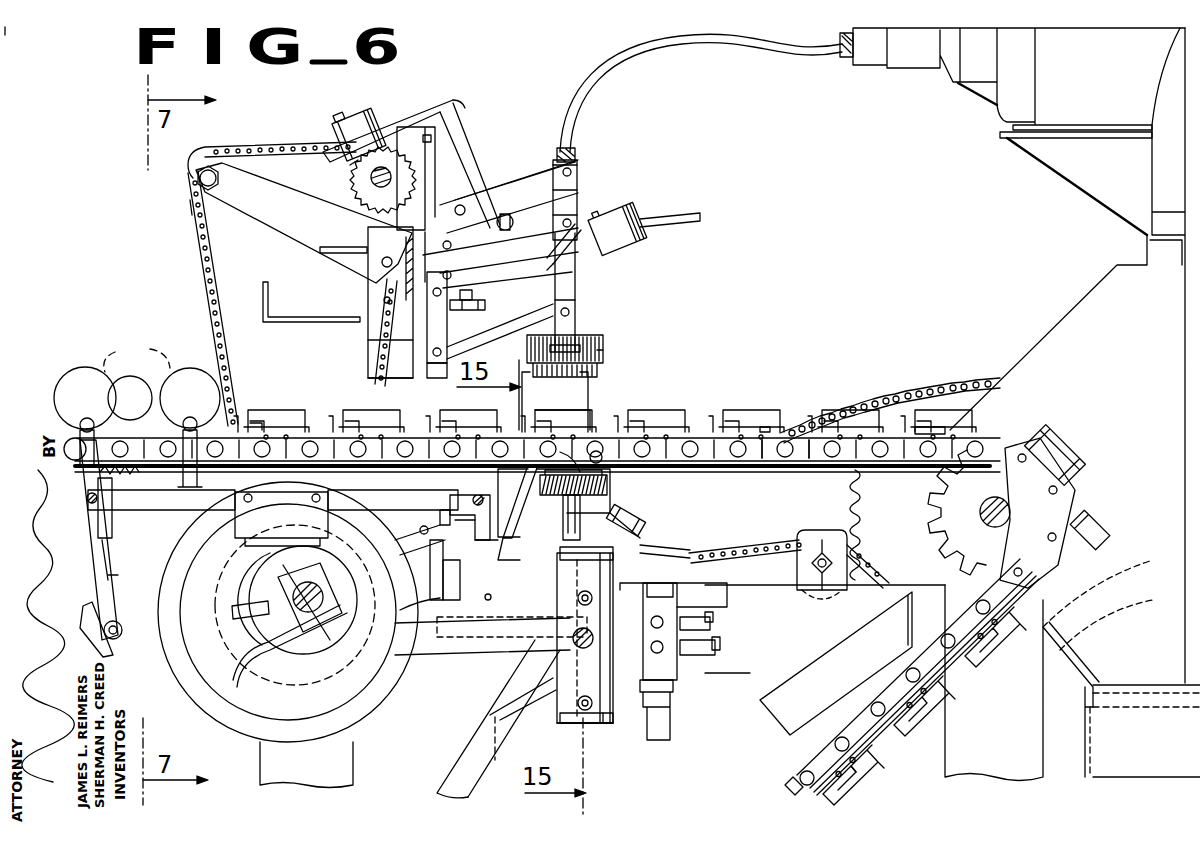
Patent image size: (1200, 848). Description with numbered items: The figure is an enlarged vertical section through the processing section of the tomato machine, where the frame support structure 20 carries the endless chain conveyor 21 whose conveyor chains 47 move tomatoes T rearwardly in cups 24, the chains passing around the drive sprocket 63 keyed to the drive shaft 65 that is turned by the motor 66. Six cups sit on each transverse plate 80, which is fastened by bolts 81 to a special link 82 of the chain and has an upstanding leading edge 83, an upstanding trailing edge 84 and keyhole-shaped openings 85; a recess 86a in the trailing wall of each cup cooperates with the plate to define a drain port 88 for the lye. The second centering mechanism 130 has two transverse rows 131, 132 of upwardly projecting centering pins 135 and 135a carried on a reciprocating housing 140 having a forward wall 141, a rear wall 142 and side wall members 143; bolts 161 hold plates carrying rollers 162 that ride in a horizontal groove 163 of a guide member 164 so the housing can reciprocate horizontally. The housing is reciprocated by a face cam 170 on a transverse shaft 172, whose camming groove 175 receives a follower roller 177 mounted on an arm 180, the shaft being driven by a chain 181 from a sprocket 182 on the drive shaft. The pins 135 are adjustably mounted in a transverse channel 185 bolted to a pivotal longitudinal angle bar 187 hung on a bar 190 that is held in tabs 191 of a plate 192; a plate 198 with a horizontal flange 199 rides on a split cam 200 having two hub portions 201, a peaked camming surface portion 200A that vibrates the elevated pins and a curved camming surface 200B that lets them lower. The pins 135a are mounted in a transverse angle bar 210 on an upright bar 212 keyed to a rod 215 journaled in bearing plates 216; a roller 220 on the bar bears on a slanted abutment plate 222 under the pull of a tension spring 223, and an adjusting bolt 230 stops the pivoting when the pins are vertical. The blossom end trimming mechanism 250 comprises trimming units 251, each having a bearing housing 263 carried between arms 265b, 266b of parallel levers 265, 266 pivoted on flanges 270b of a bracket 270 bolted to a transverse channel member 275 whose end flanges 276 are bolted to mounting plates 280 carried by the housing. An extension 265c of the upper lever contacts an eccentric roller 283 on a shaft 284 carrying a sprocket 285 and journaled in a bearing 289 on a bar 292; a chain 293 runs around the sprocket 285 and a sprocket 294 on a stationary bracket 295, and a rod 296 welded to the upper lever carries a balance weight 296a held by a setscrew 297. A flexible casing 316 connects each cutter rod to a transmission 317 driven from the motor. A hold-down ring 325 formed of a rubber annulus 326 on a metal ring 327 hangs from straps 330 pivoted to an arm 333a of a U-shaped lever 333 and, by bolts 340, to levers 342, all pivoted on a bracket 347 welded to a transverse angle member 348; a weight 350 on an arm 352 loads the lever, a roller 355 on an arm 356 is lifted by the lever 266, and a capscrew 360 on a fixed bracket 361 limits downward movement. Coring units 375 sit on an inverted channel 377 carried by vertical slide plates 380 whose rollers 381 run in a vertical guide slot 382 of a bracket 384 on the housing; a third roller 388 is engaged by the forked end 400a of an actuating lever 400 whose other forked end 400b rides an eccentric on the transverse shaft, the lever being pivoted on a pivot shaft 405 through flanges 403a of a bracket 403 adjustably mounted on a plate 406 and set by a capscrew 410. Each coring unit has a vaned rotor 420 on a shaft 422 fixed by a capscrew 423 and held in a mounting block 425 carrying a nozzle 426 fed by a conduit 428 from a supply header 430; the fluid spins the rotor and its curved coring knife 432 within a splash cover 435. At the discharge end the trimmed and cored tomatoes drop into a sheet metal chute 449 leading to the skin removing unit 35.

The machine frame 20 is at (950, 774).
The conveyor chain 21 is at (767, 405).
The cup carrier 24 is at (280, 413).
The chute 35 is at (1086, 754).
The bracket 47 is at (1043, 420).
The plate 63 is at (1015, 491).
The shaft 65 is at (993, 527).
The housing 66 is at (1158, 100).
The link 80 is at (425, 432).
The link plate 81 is at (768, 434).
The link plate 82 is at (837, 453).
The plate 83 is at (425, 413).
The bracket 84 is at (875, 750).
The cup 85 is at (283, 407).
The carrier block 86a is at (920, 427).
The cup 88 is at (952, 423).
The lever 130 is at (94, 555).
The ball 131 is at (72, 438).
The post 132 is at (200, 467).
The circle path 135 is at (207, 363).
The circle path 135a is at (83, 423).
The bracket 140 is at (467, 682).
The plate 141 is at (443, 552).
The fitting 142 is at (708, 614).
The plate 143 is at (557, 590).
The hole 161 is at (493, 621).
The hidden bar 162 is at (470, 630).
The valve block 163 is at (713, 568).
The bar 164 is at (708, 594).
The arm 170 is at (477, 700).
The ring 172 is at (267, 597).
The block 175 is at (340, 684).
The pin 177 is at (353, 680).
The link 180 is at (413, 557).
The chain 181 is at (1000, 384).
The rack 182 is at (915, 525).
The bar 185 is at (273, 496).
The link 187 is at (174, 540).
The frame plate 190 is at (468, 505).
The bracket 191 is at (480, 520).
The bracket 192 is at (487, 525).
The box 198 is at (308, 521).
The disc 199 is at (317, 538).
The wheel 200 is at (240, 675).
The wheel part 200A is at (268, 570).
The wheel part 200B is at (333, 650).
The slide block 201 is at (290, 553).
The circle path 210 is at (85, 398).
The link 212 is at (113, 567).
The bolt 215 is at (110, 513).
The plate 216 is at (100, 482).
The roller 220 is at (120, 640).
The foot 222 is at (118, 667).
The spring 223 is at (123, 477).
The circle path 230 is at (140, 395).
The arm assembly 250 is at (605, 156).
The nut 251 is at (577, 156).
The end block 263 is at (577, 182).
The arm 265 is at (527, 177).
The arm end 265b is at (580, 163).
The bar 265c is at (378, 258).
The arm 266 is at (528, 230).
The arm end 266b is at (580, 208).
The arm 270 is at (437, 240).
The pin 270b is at (452, 193).
The box 275 is at (358, 283).
The plate 276 is at (363, 268).
The cylinder 280 is at (574, 404).
The gear 283 is at (368, 205).
The hub 284 is at (371, 180).
The pin 285 is at (351, 167).
The plate 289 is at (388, 153).
The frame 292 is at (453, 100).
The chain 293 is at (197, 237).
The chain strand 294 is at (192, 227).
The arm 295 is at (270, 201).
The beam 296 is at (463, 120).
The nut 296a is at (344, 110).
The cylinder 297 is at (370, 99).
The cable 316 is at (597, 77).
The motor 317 is at (1119, 61).
The cylinder assembly 325 is at (605, 345).
The housing 326 is at (603, 370).
The plate 327 is at (604, 356).
The bar 330 is at (578, 323).
The shaft 333 is at (548, 262).
The shaft end 333a is at (575, 252).
The plate 340 is at (573, 310).
The bar 342 is at (505, 338).
The plate 347 is at (425, 357).
The plate 348 is at (400, 327).
The cylinder 350 is at (668, 206).
The rod 352 is at (668, 214).
The pin 355 is at (500, 220).
The pin 356 is at (558, 282).
The bolt 360 is at (480, 308).
The nut 361 is at (470, 303).
The shaft 375 is at (592, 467).
The rod 377 is at (652, 550).
The plate 380 is at (593, 720).
The screw 381 is at (570, 597).
The bracket 382 is at (547, 650).
The plate 384 is at (590, 740).
The nut 388 is at (580, 633).
The bracket 400 is at (380, 720).
The bracket end 400a is at (593, 728).
The bar 400b is at (280, 637).
The arm 403 is at (437, 607).
The bar 403a is at (406, 504).
The arm 405 is at (393, 648).
The plate 406 is at (440, 570).
The bracket 410 is at (457, 511).
The housing 420 is at (608, 487).
The plate 422 is at (564, 558).
The fitting 423 is at (650, 560).
The shaft 425 is at (610, 514).
The bracket 426 is at (680, 537).
The fitting 428 is at (722, 556).
The fitting 430 is at (713, 653).
The rod 432 is at (565, 445).
The gear 435 is at (597, 488).
The box 449 is at (1150, 688).
The path T is at (137, 349).